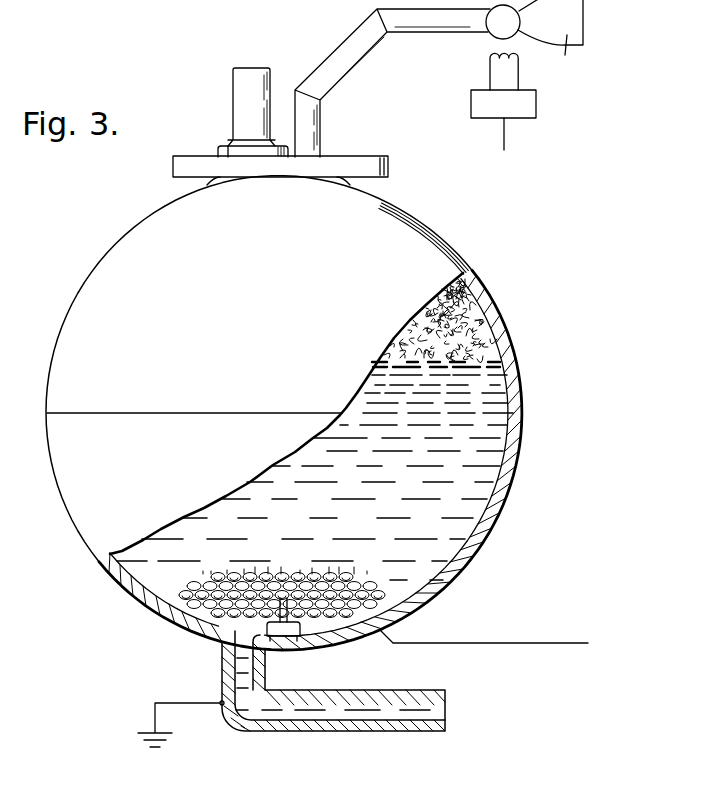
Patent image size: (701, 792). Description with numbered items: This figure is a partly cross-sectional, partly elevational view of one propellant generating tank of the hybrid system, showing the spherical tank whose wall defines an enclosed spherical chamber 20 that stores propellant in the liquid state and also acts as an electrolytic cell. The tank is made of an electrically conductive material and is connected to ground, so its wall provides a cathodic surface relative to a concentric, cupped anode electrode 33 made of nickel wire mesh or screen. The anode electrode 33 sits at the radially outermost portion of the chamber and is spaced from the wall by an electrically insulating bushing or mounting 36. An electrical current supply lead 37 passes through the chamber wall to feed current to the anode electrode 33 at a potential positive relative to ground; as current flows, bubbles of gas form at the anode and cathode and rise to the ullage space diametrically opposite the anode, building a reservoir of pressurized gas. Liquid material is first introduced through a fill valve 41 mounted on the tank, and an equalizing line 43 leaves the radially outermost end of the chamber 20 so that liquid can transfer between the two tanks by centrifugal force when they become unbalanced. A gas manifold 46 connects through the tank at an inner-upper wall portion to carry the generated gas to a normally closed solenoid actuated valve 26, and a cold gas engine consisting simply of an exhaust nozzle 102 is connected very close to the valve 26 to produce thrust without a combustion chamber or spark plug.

The enclosed spherical chamber 20 is at (483, 388).
The solenoid propellant control valve 26 is at (488, 49).
The anode electrode 33 is at (337, 614).
The electrically insulating bushing or mounting 36 is at (321, 641).
The electrical current supply lead 37 is at (503, 643).
The fill valve 41 is at (237, 105).
The equalizing line 43 is at (283, 727).
The gas manifold 46 is at (318, 116).
The exhaust nozzle 102 is at (558, 41).